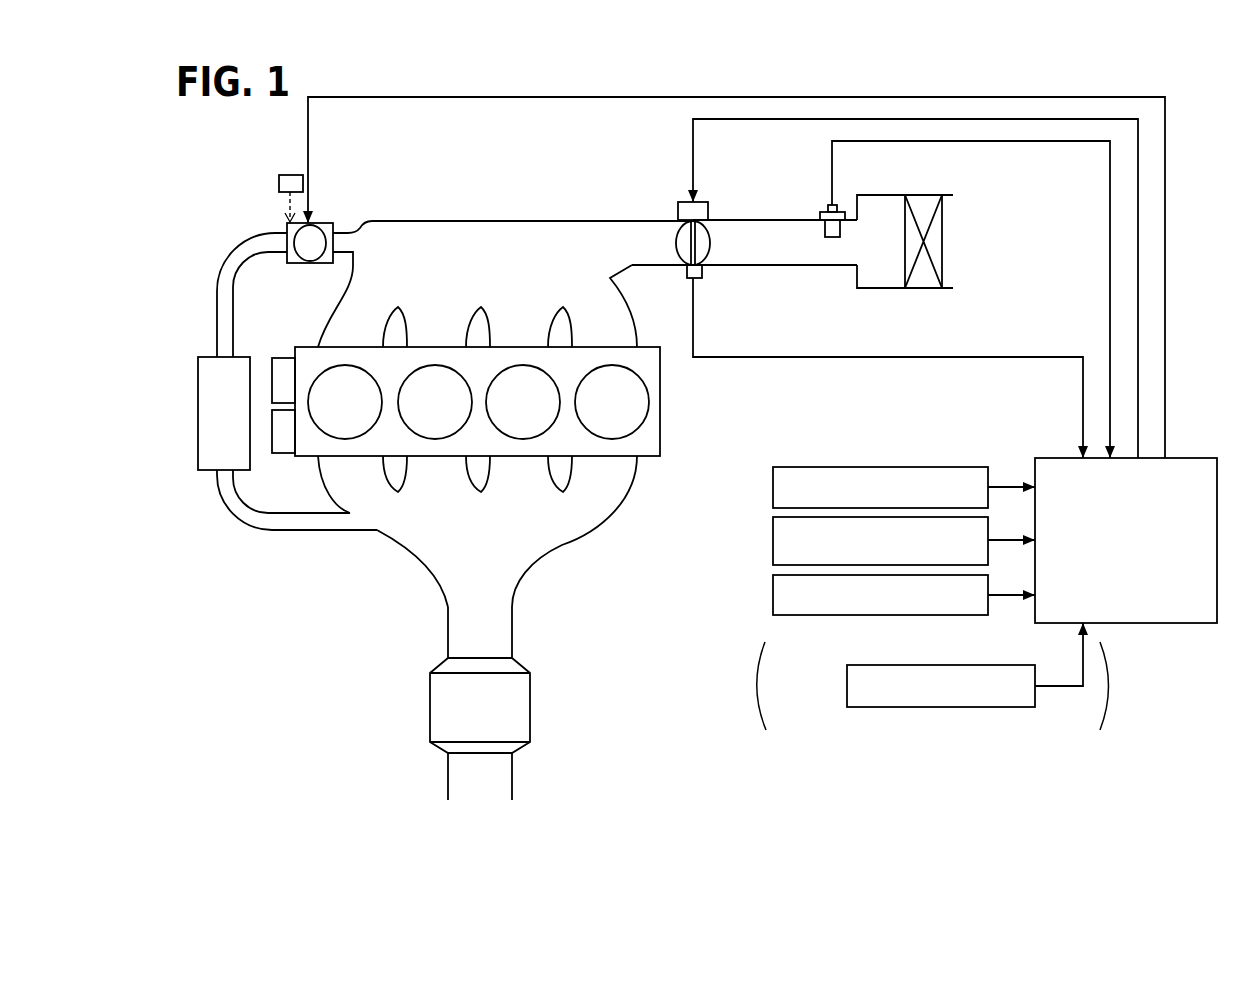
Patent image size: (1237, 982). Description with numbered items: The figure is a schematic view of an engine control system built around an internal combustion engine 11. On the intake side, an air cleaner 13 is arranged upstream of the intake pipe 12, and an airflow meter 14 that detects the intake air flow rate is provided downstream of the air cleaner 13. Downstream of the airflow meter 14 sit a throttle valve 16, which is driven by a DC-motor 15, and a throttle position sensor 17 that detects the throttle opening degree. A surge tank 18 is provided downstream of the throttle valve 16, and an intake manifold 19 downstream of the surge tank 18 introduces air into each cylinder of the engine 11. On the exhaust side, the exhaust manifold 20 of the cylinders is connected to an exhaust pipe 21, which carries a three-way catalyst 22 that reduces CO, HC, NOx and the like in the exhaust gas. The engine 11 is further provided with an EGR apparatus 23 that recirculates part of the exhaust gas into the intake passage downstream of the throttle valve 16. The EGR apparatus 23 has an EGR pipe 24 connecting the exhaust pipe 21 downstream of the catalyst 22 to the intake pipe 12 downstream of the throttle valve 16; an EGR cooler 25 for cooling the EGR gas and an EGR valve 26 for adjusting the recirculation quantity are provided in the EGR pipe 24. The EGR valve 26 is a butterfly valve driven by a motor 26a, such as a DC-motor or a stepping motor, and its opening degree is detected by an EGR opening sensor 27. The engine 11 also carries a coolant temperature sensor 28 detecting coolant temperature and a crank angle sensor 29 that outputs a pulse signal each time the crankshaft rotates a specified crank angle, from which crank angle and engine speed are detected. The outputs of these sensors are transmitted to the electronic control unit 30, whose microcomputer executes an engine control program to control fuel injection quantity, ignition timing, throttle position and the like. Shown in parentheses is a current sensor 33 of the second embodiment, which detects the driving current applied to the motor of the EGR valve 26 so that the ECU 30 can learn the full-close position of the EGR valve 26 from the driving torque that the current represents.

The internal combustion engine 11 is at (456, 215).
The intake pipe 12 is at (757, 220).
The air cleaner 13 is at (943, 240).
The airflow meter 14 is at (822, 228).
The DC-motor 15 is at (683, 202).
The throttle valve 16 is at (677, 245).
The throttle position sensor 17 is at (702, 272).
The surge tank 18 is at (493, 221).
The intake manifold 19 is at (325, 312).
The exhaust manifold 20 is at (322, 490).
The exhaust pipe 21 is at (447, 602).
The three-way catalyst 22 is at (430, 703).
The EGR apparatus 23 is at (268, 213).
The EGR pipe 24 is at (217, 296).
The EGR cooler 25 is at (198, 406).
The EGR valve 26 is at (322, 222).
The motor 26a is at (290, 175).
The EGR opening sensor 27 is at (773, 483).
The coolant temperature sensor 28 is at (773, 535).
The crank angle sensor 29 is at (773, 590).
The electronic control unit (ECU) 30 is at (1172, 458).
The current sensor 33 is at (847, 680).